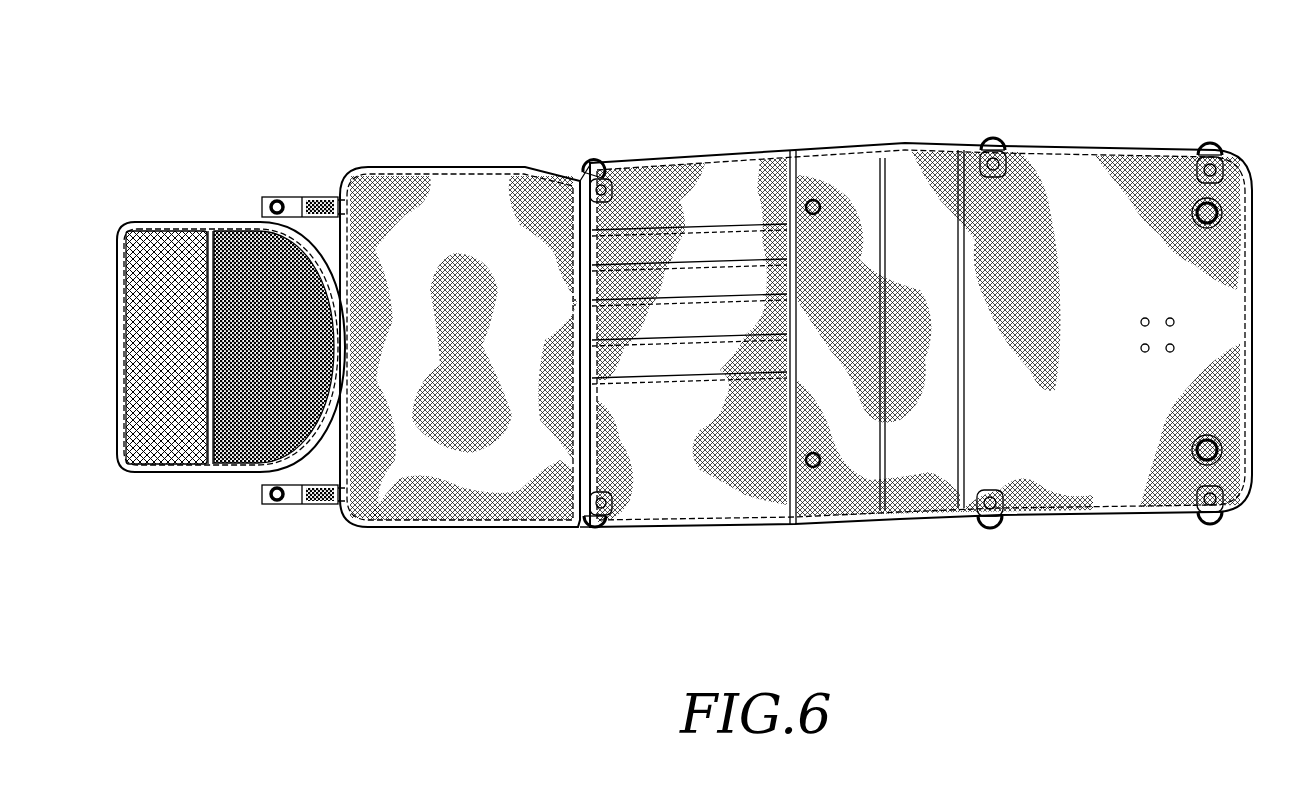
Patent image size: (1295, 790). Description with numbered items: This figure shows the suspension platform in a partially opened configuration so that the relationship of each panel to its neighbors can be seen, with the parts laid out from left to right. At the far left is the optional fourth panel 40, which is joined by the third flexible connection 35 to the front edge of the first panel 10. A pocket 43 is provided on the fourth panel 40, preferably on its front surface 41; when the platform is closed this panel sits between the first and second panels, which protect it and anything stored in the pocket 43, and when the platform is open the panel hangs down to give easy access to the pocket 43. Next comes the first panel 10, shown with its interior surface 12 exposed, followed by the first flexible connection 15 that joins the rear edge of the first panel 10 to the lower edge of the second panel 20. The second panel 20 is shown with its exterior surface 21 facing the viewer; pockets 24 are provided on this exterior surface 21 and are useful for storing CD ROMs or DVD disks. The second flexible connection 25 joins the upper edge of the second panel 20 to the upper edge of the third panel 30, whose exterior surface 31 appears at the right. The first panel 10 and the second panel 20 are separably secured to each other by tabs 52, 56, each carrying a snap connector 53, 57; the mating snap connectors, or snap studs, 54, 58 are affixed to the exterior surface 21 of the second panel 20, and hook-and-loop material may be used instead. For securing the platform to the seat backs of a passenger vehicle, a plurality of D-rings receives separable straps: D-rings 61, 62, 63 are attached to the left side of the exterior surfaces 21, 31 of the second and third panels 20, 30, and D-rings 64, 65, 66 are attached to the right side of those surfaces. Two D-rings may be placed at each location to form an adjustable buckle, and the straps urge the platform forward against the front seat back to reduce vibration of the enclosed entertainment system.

The first panel 10 is at (485, 535).
The interior surface of first panel 12 is at (515, 452).
The first flexible connection 15 is at (575, 525).
The second panel 20 is at (748, 537).
The exterior surface of second panel 21 is at (678, 450).
The pockets 24 is at (748, 225).
The second flexible connection 25 is at (930, 540).
The third panel 30 is at (1170, 540).
The exterior surface of third panel 31 is at (1085, 420).
The third flexible connection 35 is at (352, 395).
The fourth panel 40 is at (204, 480).
The front surface of fourth panel 41 is at (238, 432).
The pocket 43 is at (150, 470).
The tab 52 is at (322, 192).
The snap connector 53 is at (278, 192).
The mating snap connector 54 is at (820, 197).
The tab 56 is at (332, 515).
The snap connector 57 is at (278, 508).
The mating snap connector 58 is at (815, 472).
The D-ring 61 is at (596, 152).
The D-ring 62 is at (996, 128).
The D-ring 63 is at (1214, 132).
The D-ring 64 is at (600, 540).
The D-ring 65 is at (992, 542).
The D-ring 66 is at (1212, 542).